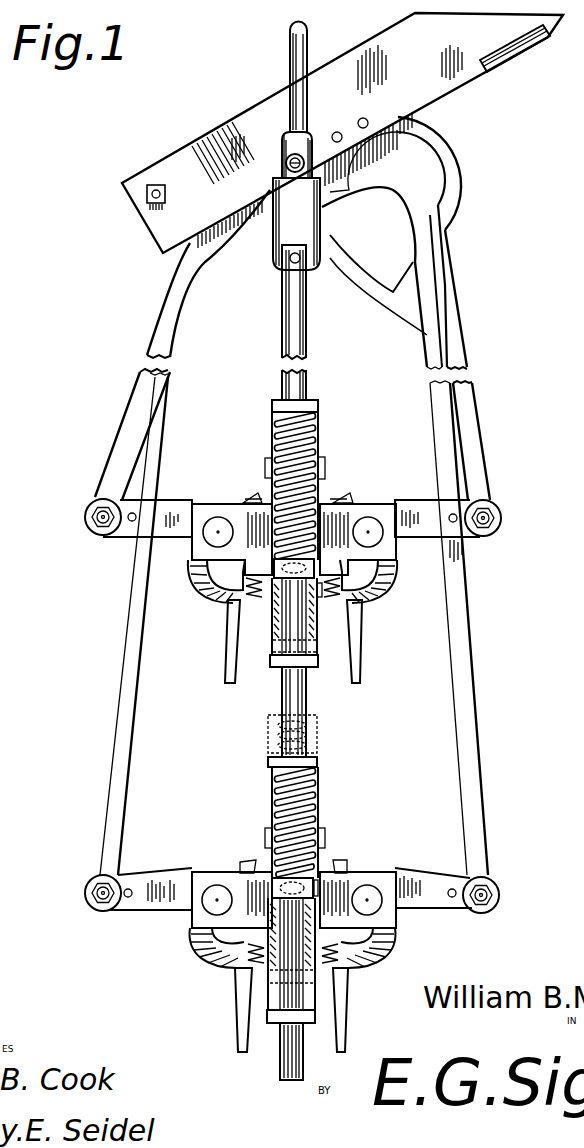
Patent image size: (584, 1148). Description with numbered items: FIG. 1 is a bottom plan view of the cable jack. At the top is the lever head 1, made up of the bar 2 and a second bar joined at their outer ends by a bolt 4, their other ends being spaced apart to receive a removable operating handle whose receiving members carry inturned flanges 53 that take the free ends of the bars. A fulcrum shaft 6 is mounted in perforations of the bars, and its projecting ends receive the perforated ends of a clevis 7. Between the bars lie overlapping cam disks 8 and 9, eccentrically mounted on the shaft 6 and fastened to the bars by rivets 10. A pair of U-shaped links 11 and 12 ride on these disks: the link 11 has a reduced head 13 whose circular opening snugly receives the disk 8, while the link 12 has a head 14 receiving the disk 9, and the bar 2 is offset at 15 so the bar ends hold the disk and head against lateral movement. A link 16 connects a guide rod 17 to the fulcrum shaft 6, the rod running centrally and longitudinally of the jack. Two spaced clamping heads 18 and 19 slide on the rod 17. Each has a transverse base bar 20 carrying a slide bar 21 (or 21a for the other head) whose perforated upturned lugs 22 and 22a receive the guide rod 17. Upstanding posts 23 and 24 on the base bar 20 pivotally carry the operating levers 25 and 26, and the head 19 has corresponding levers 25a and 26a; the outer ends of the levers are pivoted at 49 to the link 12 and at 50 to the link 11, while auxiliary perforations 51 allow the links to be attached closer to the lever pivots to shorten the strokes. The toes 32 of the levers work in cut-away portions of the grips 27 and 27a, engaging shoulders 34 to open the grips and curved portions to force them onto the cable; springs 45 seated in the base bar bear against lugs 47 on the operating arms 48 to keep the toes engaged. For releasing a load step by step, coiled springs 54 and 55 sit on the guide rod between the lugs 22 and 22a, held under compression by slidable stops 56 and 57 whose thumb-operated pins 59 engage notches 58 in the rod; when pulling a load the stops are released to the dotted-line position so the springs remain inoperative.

The lever head 1 is at (342, 133).
The bar 2 is at (283, 155).
The bolt 4 is at (163, 186).
The fulcrum shaft 6 is at (286, 163).
The clevis 7 is at (305, 46).
The cam disk 8 is at (229, 246).
The cam disk 9 is at (360, 193).
The rivets 10 is at (361, 119).
The U-shaped link 11 is at (438, 420).
The U-shaped link 12 is at (462, 332).
The head 13 is at (270, 253).
The head 14 is at (396, 164).
The offset 15 is at (212, 195).
The link 16 is at (296, 224).
The guide rod 17 is at (308, 336).
The clamping head 18 is at (326, 486).
The clamping head 19 is at (326, 822).
The transverse base bar 20 is at (377, 507).
The slide bar 21 is at (318, 426).
The slide bar 21a is at (272, 806).
The upturned lug 22 is at (309, 400).
The upturned lug 22a is at (307, 667).
The upstanding post 23 is at (381, 534).
The upstanding post 24 is at (204, 534).
The operating lever 25 is at (411, 500).
The operating lever 25a is at (426, 877).
The operating lever 26 is at (176, 501).
The operating lever 26a is at (168, 872).
The grips 27 is at (266, 470).
The grips 27a is at (335, 858).
The toes 32 is at (250, 497).
The shoulder 34 is at (242, 497).
The spring 45 is at (204, 582).
The lug 47 is at (240, 594).
The operating arm 48 is at (226, 666).
The pivot 49 is at (97, 523).
The pivot 50 is at (93, 900).
The auxiliary perforations 51 is at (131, 523).
The flanges 53 is at (520, 56).
The coiled spring 54 is at (276, 420).
The coiled spring 55 is at (273, 783).
The stop 56 is at (272, 612).
The stop 57 is at (268, 893).
The notches 58 is at (318, 541).
The pins 59 is at (323, 596).